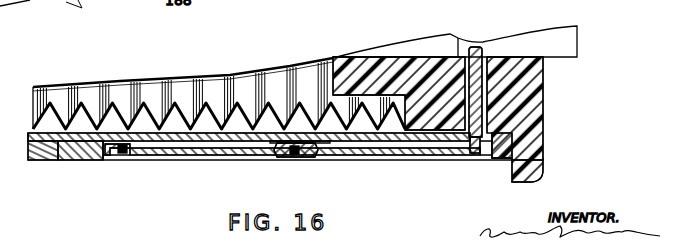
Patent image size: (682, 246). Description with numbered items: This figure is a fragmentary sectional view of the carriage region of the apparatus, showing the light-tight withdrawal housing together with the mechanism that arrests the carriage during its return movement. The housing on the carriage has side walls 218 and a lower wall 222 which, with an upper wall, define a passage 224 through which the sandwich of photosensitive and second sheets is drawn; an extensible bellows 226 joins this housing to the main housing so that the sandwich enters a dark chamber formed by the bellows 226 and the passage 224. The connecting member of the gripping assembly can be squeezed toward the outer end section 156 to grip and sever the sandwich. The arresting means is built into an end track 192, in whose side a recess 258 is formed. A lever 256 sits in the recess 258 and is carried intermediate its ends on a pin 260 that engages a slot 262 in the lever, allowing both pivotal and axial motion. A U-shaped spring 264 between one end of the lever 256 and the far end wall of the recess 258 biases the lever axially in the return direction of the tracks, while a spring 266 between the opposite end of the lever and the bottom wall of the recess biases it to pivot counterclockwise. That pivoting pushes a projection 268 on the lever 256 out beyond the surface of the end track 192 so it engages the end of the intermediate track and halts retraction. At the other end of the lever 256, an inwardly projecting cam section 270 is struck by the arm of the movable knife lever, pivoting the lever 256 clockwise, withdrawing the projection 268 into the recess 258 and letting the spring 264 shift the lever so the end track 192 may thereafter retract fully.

The outer end section 156 is at (568, 42).
The end track 192 is at (57, 145).
The side walls 218 is at (500, 63).
The lower wall 222 is at (541, 173).
The passage 224 is at (440, 43).
The extensible bellows 226 is at (107, 122).
The lever 256 is at (441, 152).
The recess 258 is at (330, 143).
The pin 260 is at (309, 150).
The slot 262 is at (291, 153).
The U-shaped spring 264 is at (510, 153).
The spring 266 is at (148, 157).
The projection 268 is at (125, 153).
The cam section 270 is at (507, 116).